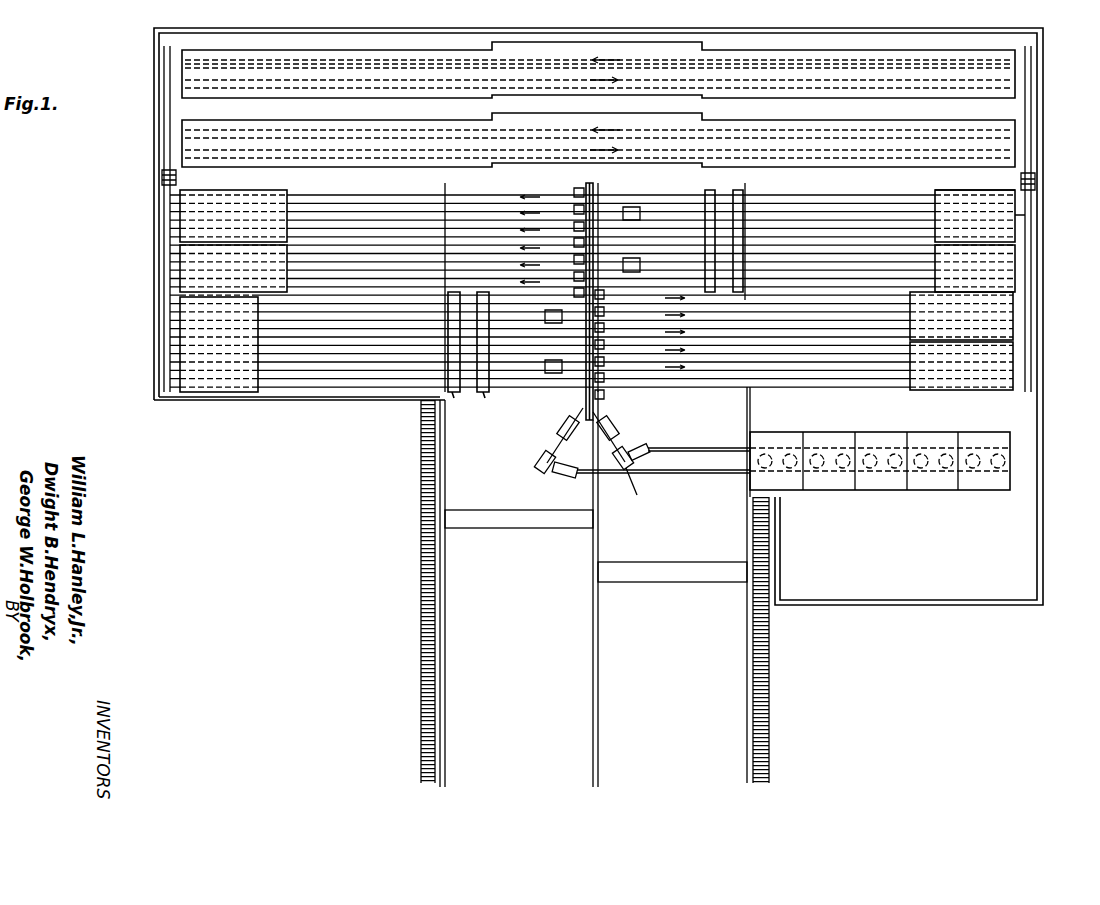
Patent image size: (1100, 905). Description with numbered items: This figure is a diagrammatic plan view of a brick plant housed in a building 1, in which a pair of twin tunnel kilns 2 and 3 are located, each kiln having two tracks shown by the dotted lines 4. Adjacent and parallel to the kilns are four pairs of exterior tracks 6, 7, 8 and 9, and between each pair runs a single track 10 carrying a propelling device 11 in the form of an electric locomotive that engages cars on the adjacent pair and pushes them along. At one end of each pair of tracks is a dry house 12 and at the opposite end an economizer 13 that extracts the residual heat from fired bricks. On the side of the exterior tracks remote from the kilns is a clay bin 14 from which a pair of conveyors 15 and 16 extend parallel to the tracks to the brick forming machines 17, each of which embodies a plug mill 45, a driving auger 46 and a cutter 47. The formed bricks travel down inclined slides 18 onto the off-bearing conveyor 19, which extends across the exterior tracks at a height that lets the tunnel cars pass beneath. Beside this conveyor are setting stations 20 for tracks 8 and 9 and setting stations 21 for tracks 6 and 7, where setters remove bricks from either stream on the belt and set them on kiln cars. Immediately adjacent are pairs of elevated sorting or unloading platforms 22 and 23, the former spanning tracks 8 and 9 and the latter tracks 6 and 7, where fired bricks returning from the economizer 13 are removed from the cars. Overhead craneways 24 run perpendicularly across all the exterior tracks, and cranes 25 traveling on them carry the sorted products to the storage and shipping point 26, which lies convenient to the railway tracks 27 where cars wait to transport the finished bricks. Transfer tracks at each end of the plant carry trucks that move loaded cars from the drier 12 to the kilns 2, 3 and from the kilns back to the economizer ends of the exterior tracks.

The building 1 is at (1037, 142).
The tunnel kiln 2 is at (952, 50).
The tunnel kiln 3 is at (1005, 120).
The kiln tracks 4 is at (882, 56).
The pair of exterior tracks 6 is at (1018, 218).
The pair of exterior tracks 7 is at (1018, 268).
The pair of exterior tracks 8 is at (1018, 318).
The pair of exterior tracks 9 is at (1018, 372).
The single track 10 is at (872, 215).
The propelling device 11 is at (635, 262).
The dry house 12 is at (275, 248).
The economizer 13 is at (205, 378).
The clay bin 14 is at (896, 492).
The conveyor 15 is at (720, 448).
The conveyor 16 is at (720, 474).
The brick forming machine 17 is at (533, 460).
The slide 18 is at (562, 420).
The off-bearing conveyor 19 is at (586, 398).
The setting station 20 is at (600, 398).
The setting station 21 is at (574, 190).
The sorting or unloading platform 22 is at (484, 392).
The sorting or unloading platform 23 is at (738, 198).
The overhead craneway 24 is at (448, 188).
The crane 25 is at (528, 525).
The storage and shipping point 26 is at (596, 760).
The railway tracks 27 is at (424, 616).
The plug mill 45 is at (648, 448).
The driving auger 46 is at (644, 488).
The cutter 47 is at (616, 424).